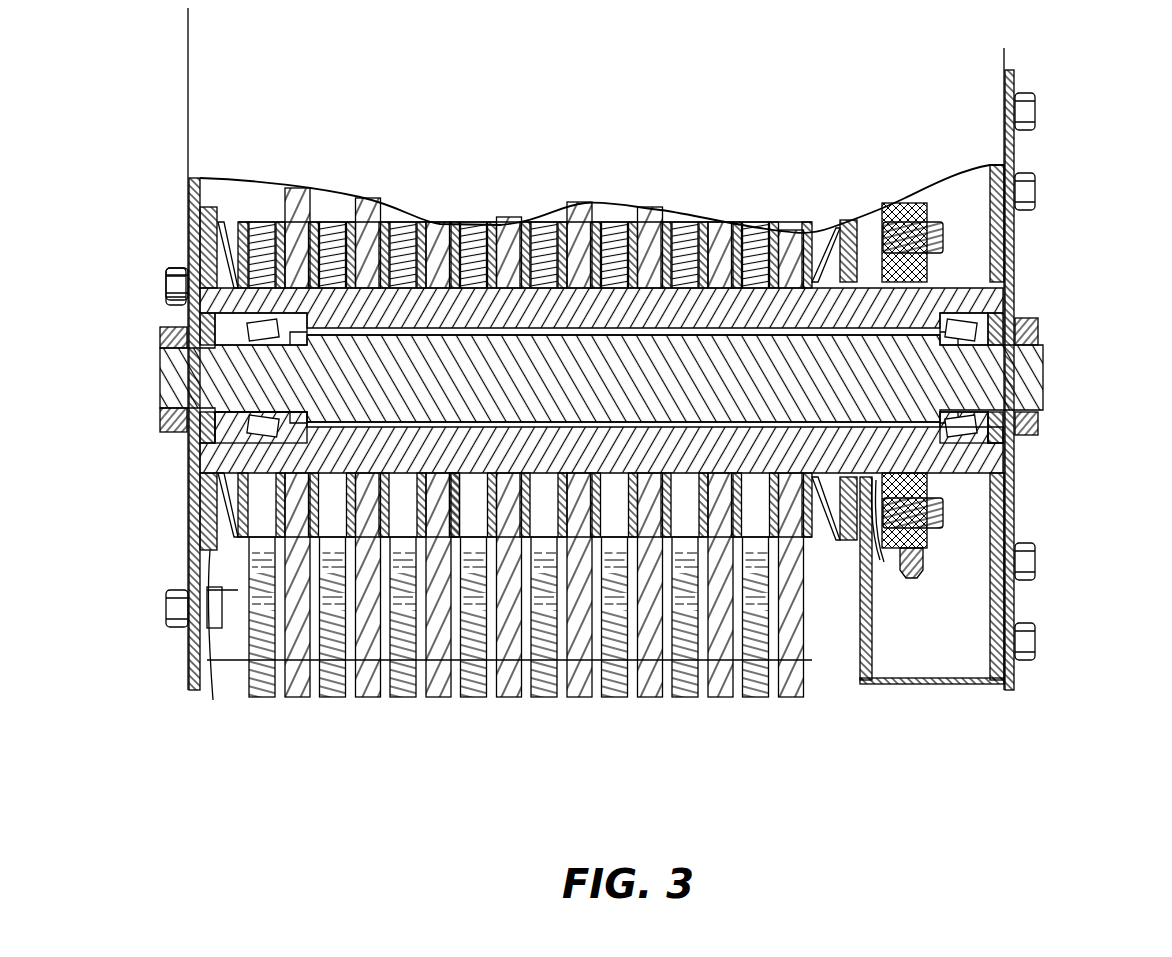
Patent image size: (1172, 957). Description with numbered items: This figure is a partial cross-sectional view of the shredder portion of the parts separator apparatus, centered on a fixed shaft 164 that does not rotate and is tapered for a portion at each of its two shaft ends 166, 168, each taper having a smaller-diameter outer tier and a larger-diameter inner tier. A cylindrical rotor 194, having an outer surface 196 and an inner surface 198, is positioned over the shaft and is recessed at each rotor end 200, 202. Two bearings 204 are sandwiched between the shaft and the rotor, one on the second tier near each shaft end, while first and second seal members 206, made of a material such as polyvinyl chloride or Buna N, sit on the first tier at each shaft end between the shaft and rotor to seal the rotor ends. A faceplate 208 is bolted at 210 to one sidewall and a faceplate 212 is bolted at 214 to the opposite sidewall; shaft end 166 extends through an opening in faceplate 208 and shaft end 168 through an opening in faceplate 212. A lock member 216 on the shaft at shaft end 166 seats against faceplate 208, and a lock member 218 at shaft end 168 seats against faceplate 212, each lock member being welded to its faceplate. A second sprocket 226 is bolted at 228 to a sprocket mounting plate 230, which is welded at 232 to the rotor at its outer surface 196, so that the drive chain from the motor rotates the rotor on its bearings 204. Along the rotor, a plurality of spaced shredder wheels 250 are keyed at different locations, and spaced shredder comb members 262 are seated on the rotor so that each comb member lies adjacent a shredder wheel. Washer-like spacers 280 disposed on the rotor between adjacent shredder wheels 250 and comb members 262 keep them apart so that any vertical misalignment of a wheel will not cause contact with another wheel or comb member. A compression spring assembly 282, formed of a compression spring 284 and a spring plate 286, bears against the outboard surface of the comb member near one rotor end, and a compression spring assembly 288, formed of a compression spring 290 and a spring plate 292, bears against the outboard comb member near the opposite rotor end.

The fixed shaft 164 is at (1040, 385).
The shaft end 166 is at (1055, 370).
The shaft end 168 is at (152, 378).
The cylindrical rotor 194 is at (990, 455).
The outer surface 196 is at (1003, 445).
The inner surface 198 is at (1010, 475).
The rotor end 200 is at (1035, 509).
The rotor end 202 is at (164, 458).
The bearings 204 is at (1004, 297).
The seal members 206 is at (1002, 320).
The faceplate 208 is at (1012, 672).
The bolts 210 is at (1036, 640).
The faceplate 212 is at (190, 682).
The bolts 214 is at (168, 607).
The lock member 216 is at (1036, 420).
The lock member 218 is at (165, 432).
The second sprocket 226 is at (916, 565).
The bolts 228 is at (942, 515).
The sprocket mounting plate 230 is at (882, 520).
The weld 232 is at (878, 562).
The shredder wheels 250 is at (440, 700).
The shredder comb members 262 is at (458, 700).
The spacers 280 is at (452, 700).
The compression spring assembly 282 is at (838, 715).
The compression spring 284 is at (830, 525).
The spring plate 286 is at (845, 560).
The compression spring assembly 288 is at (230, 728).
The compression spring 290 is at (240, 700).
The spring plate 292 is at (213, 700).